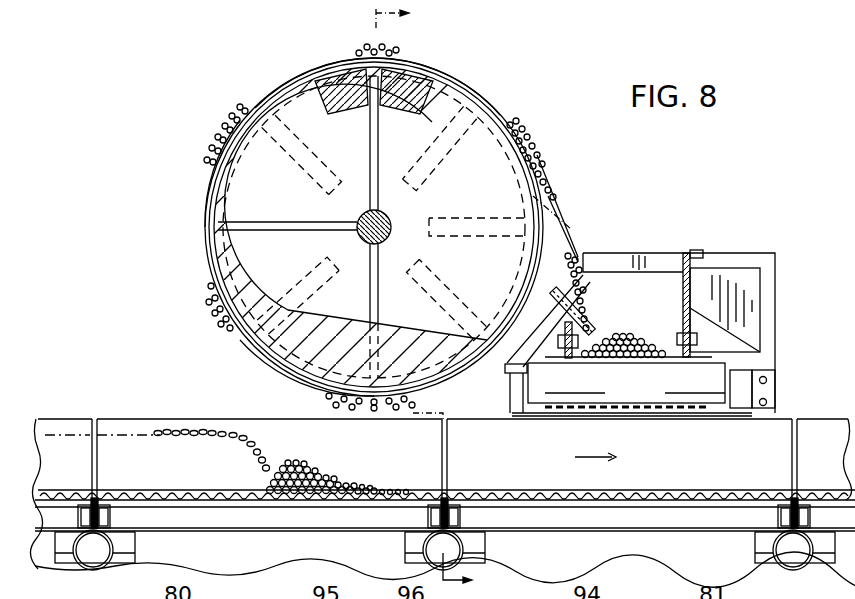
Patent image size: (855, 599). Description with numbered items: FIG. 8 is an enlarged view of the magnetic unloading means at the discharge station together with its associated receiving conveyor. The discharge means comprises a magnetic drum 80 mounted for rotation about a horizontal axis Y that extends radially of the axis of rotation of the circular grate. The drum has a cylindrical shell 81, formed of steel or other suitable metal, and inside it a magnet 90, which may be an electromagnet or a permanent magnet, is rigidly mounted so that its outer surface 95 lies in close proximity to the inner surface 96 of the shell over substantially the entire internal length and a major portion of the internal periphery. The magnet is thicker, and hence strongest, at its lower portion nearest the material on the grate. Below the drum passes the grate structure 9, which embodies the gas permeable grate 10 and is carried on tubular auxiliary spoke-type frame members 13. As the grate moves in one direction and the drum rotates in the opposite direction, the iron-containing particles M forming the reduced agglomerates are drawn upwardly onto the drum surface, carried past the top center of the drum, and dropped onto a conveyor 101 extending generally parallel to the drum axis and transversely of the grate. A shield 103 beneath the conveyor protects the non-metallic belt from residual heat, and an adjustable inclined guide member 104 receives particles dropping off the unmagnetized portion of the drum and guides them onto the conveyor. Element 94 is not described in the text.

The magnetic drum 80 is at (505, 115).
The cylindrical shell 81 is at (307, 70).
The inner surface 96 is at (484, 98).
The outer surface 95 is at (207, 207).
The magnet 90 is at (308, 382).
The guide chute 94 is at (528, 132).
The iron-containing particles M is at (206, 301).
The horizontal axis Y is at (393, 233).
The adjustable inclined guide member 104 is at (588, 336).
The conveyor 101 is at (697, 357).
The shield 103 is at (678, 413).
The gas permeable grate 10 is at (521, 490).
The auxiliary spoke-type frame members 13 is at (112, 544).
The grate structure 9 is at (439, 303).